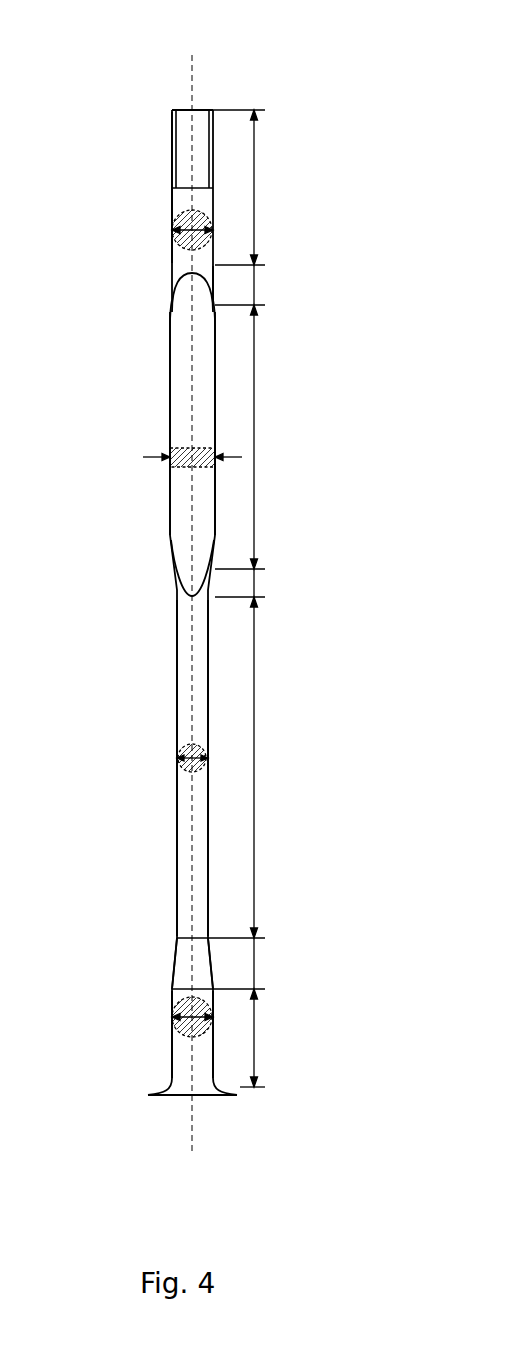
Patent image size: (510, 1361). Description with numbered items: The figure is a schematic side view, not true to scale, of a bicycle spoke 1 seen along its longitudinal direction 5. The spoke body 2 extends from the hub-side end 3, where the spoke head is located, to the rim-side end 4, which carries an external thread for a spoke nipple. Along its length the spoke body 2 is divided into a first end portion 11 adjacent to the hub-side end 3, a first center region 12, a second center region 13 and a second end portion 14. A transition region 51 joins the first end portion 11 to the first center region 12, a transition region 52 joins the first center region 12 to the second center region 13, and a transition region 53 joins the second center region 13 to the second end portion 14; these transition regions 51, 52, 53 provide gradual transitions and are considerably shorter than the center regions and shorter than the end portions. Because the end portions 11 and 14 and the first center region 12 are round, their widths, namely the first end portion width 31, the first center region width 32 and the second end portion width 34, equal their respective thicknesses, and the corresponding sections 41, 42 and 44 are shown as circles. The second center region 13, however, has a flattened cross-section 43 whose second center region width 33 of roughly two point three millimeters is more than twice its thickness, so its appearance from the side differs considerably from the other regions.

The spoke 1 is at (95, 96).
The spoke body 2 is at (172, 1078).
The hub-side end 3 is at (135, 1121).
The rim-side end 4 is at (150, 126).
The longitudinal direction 5 is at (192, 80).
The first end portion 11 is at (254, 1044).
The first center region 12 is at (254, 758).
The second center region 13 is at (254, 420).
The second end portion 14 is at (254, 186).
The first end portion width 31 is at (172, 1006).
The first center region width 32 is at (177, 751).
The second center region width 33 is at (170, 451).
The second end portion width 34 is at (170, 221).
The first diameter 41 is at (172, 1025).
The second diameter 42 is at (177, 765).
The flattened cross-section 43 is at (170, 466).
The fourth diameter 44 is at (170, 244).
The transition region 51 is at (254, 964).
The transition region 52 is at (254, 590).
The transition region 53 is at (254, 296).